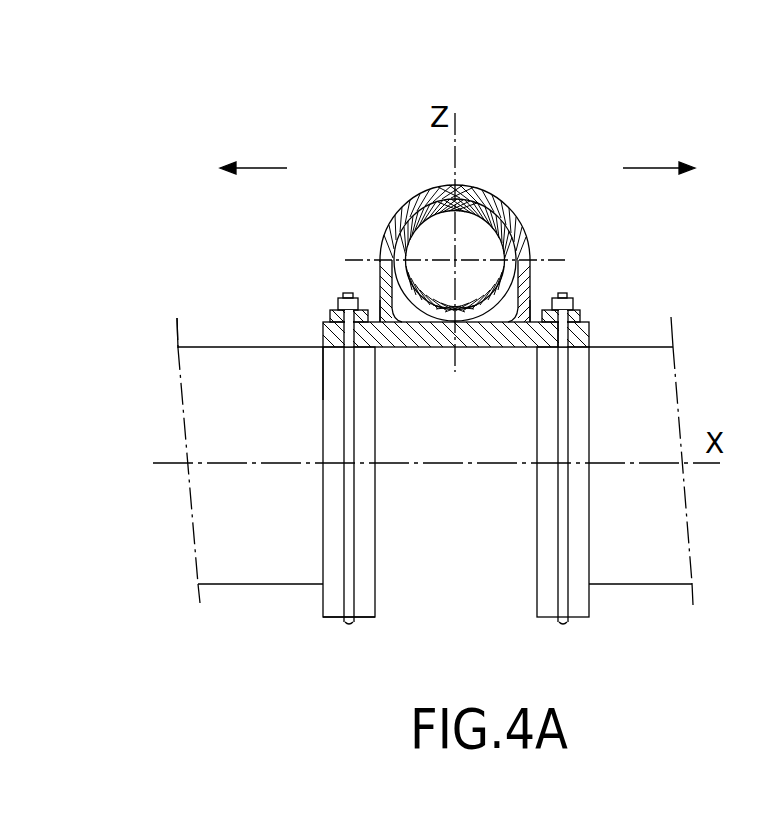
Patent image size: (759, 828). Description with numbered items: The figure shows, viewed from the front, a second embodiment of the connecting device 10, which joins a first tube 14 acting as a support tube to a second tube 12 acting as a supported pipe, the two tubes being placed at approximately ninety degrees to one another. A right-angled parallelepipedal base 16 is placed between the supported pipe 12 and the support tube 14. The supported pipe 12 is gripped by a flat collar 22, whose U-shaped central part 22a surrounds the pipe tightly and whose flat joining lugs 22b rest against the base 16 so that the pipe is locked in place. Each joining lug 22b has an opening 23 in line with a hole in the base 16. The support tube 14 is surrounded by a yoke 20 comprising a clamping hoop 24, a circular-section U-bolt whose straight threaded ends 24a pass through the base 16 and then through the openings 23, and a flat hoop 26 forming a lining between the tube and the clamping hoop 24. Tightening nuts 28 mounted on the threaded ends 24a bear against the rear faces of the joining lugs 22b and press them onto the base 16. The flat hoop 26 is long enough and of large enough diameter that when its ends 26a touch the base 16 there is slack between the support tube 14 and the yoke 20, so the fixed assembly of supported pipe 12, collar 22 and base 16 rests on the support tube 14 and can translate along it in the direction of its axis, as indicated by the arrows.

The connecting device 10 is at (377, 177).
The second tube 12 is at (513, 213).
The first tube 14 is at (593, 587).
The base 16 is at (322, 325).
The yoke 20 is at (367, 633).
The flat collar 22 is at (463, 175).
The U-shaped central part 22a is at (388, 223).
The joining lug 22b is at (540, 300).
The opening 23 is at (584, 320).
The clamping hoop 24 is at (350, 623).
The threaded end 24a is at (562, 338).
The flat hoop 26 is at (360, 558).
The end of the flat hoop 26a is at (320, 355).
The tightening nut 28 is at (343, 296).